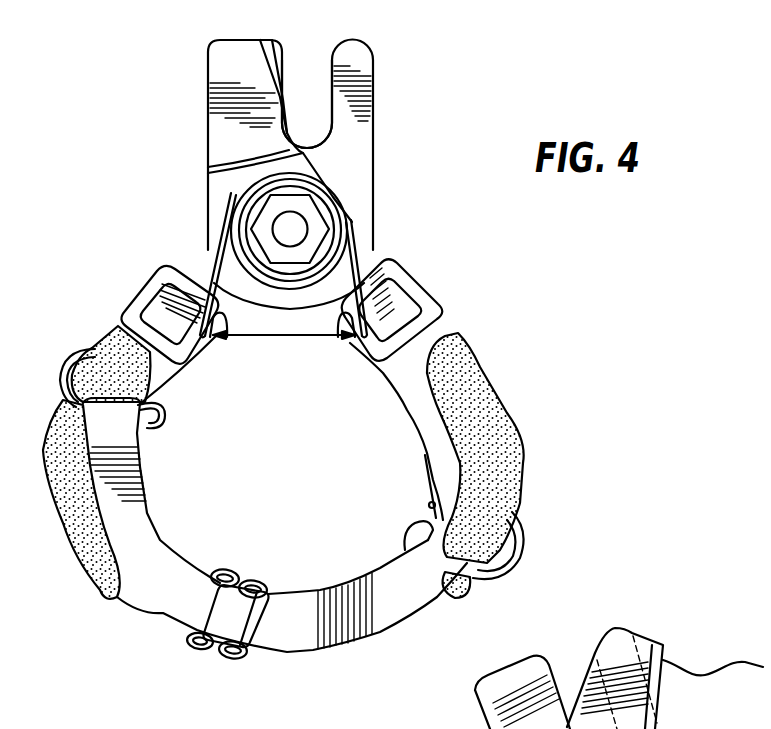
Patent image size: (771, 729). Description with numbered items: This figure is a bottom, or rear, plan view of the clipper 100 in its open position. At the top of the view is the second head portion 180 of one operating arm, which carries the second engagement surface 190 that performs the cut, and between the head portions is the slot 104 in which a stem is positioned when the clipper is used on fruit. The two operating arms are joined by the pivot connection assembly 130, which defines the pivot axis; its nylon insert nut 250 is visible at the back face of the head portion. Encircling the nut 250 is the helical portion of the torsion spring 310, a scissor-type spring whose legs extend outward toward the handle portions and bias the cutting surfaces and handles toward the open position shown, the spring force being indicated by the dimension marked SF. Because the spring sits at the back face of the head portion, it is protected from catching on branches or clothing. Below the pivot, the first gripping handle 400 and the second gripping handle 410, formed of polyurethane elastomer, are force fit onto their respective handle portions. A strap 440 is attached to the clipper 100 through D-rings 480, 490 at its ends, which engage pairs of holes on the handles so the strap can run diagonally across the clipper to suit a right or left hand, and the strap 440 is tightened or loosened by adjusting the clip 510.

The clipper 100 is at (406, 364).
The slot 104 is at (306, 64).
The pivot connection assembly 130 is at (229, 205).
The second head portion 180 is at (223, 122).
The second engagement surface 190 is at (286, 114).
The nylon insert nut 250 is at (263, 232).
The torsion spring 310 is at (353, 242).
The first gripping handle 400 is at (70, 517).
The second gripping handle 410 is at (512, 432).
The strap 440 is at (367, 620).
The D-ring 480 is at (157, 407).
The D-ring 490 is at (520, 545).
The clip 510 is at (223, 655).